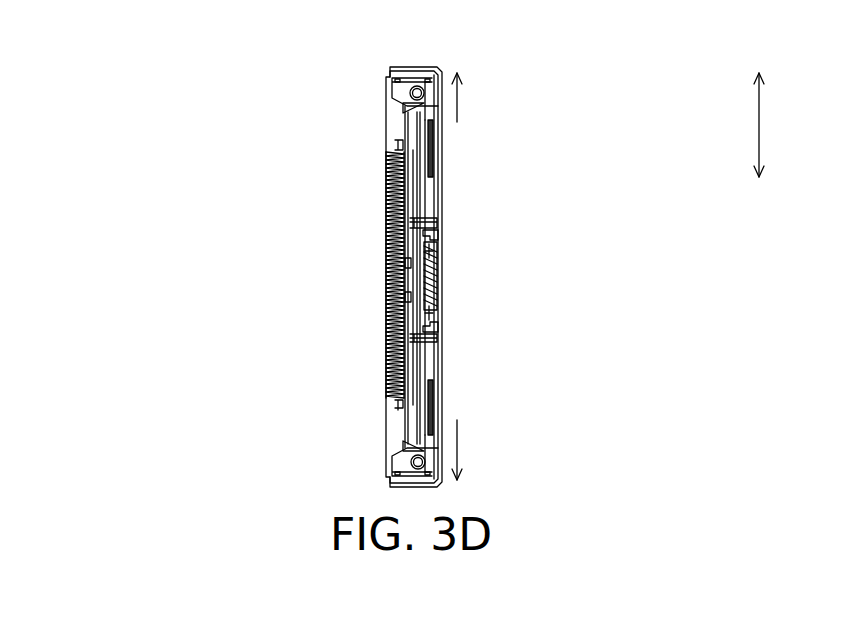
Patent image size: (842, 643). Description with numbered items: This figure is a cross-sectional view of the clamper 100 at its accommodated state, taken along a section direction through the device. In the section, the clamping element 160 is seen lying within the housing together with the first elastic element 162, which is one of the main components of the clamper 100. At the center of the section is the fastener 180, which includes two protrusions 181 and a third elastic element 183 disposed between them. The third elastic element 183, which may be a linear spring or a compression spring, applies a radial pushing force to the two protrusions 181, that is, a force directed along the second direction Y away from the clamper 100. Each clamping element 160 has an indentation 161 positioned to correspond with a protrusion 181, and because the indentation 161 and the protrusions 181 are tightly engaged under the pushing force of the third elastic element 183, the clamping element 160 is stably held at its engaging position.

The clamper 100 is at (80, 56).
The clamping element 160 is at (440, 141).
The indentation 161 is at (437, 222).
The first elastic element 162 is at (397, 262).
The fastener 180 is at (505, 227).
The protrusion 181 is at (426, 243).
The third elastic element 183 is at (432, 269).